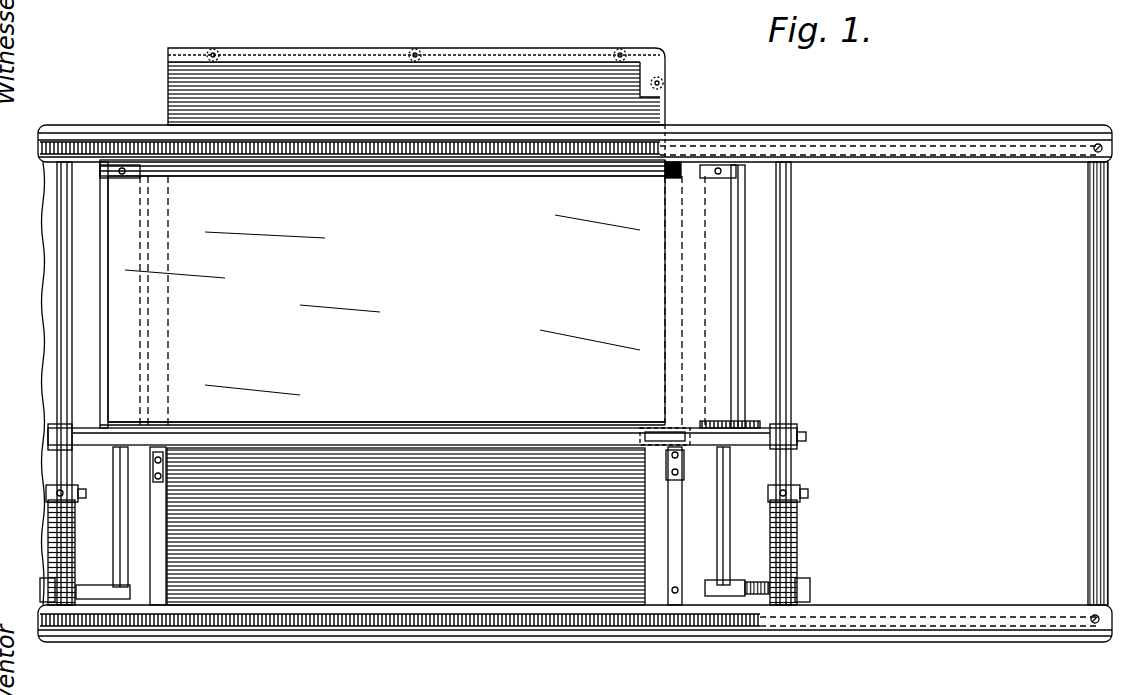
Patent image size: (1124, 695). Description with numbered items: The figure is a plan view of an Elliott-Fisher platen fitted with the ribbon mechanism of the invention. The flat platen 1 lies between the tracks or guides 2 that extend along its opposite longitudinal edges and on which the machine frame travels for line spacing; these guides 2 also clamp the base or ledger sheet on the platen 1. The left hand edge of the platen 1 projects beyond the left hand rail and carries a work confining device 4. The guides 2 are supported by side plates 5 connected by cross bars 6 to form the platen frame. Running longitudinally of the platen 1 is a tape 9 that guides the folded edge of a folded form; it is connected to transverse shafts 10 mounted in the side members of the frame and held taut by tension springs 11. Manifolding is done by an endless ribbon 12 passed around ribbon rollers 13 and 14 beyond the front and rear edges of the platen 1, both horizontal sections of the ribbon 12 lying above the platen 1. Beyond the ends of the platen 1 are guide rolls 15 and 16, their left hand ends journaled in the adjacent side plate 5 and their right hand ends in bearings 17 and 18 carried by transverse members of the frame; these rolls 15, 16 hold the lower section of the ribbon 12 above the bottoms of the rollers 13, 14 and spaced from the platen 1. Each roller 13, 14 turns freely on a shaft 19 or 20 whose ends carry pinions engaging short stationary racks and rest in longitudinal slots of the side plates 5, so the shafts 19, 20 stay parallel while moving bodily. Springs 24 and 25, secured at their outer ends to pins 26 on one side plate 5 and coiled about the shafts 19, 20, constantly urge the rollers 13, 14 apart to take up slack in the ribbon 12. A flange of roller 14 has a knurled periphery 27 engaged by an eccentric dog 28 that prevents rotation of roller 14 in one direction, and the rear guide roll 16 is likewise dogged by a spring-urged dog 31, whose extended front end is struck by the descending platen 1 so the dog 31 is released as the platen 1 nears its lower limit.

The flat platen 1 is at (310, 596).
The tracks or guides 2 is at (680, 145).
The work confining device 4 is at (505, 66).
The side plates 5 is at (925, 150).
The cross bars 6 is at (152, 512).
The tape 9 is at (467, 437).
The transverse shafts 10 is at (58, 404).
The tension springs 11 is at (798, 532).
The endless ribbon 12 is at (382, 300).
The ribbon roller 13 is at (112, 173).
The ribbon roller 14 is at (740, 426).
The guide roll 15 is at (168, 180).
The guide roll 16 is at (673, 178).
The bearing 17 is at (152, 459).
The bearing 18 is at (683, 465).
The shaft 19 is at (92, 492).
The shaft 20 is at (731, 516).
The spring 24 is at (90, 592).
The spring 25 is at (738, 582).
The pins 26 is at (808, 588).
The knurled periphery 27 is at (714, 179).
The eccentric dog 28 is at (770, 172).
The spring-urged dog 31 is at (645, 440).